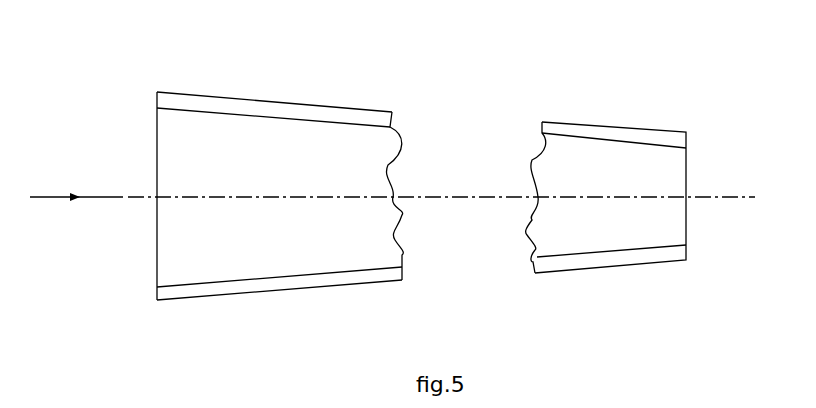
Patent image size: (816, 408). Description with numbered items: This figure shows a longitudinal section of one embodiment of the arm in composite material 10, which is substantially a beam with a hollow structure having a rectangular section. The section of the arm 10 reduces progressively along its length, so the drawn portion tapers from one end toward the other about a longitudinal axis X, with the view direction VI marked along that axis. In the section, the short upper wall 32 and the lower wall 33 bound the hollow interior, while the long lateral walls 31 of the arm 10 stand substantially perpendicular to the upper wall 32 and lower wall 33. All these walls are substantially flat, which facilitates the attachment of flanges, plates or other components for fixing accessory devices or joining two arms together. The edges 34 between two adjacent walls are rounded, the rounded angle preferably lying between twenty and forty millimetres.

The arm in composite material 10 is at (607, 70).
The long lateral walls 31 is at (608, 239).
The short upper wall 32 is at (339, 108).
The lower wall 33 is at (348, 285).
The edges 34 is at (199, 104).
The longitudinal axis X is at (725, 196).
The viewing direction VI is at (53, 183).